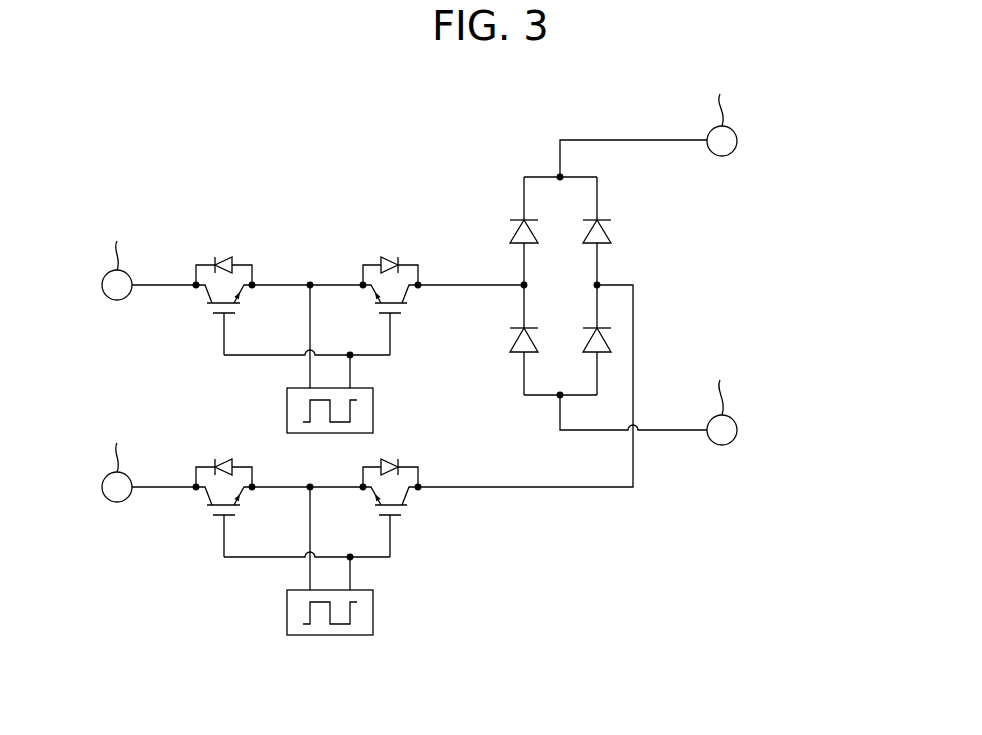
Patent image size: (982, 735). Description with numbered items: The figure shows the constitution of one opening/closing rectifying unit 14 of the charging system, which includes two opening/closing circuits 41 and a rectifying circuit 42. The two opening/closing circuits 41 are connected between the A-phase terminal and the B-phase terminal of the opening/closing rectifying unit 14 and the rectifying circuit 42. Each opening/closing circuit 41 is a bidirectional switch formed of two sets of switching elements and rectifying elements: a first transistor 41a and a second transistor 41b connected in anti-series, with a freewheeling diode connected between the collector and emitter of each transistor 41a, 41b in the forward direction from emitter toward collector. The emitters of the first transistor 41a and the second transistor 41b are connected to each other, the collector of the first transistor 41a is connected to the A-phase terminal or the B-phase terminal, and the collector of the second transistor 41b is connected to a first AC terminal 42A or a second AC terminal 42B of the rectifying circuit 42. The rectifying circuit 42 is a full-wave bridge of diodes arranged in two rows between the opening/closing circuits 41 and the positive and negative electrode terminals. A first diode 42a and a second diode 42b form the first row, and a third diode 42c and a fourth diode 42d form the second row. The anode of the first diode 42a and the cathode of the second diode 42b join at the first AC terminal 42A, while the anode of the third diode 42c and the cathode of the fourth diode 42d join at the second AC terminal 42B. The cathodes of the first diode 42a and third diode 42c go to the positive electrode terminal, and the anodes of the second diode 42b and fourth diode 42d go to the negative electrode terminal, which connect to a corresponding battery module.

The opening/closing rectifying unit 14 is at (820, 192).
The opening/closing circuit 41 is at (200, 253).
The first transistor 41a is at (218, 315).
The second transistor 41b is at (397, 316).
The rectifying circuit 42 is at (531, 158).
The first diode 42a is at (520, 217).
The second diode 42b is at (520, 328).
The third diode 42c is at (602, 217).
The fourth diode 42d is at (602, 328).
The first AC terminal 42A is at (521, 282).
The second AC terminal 42B is at (600, 282).